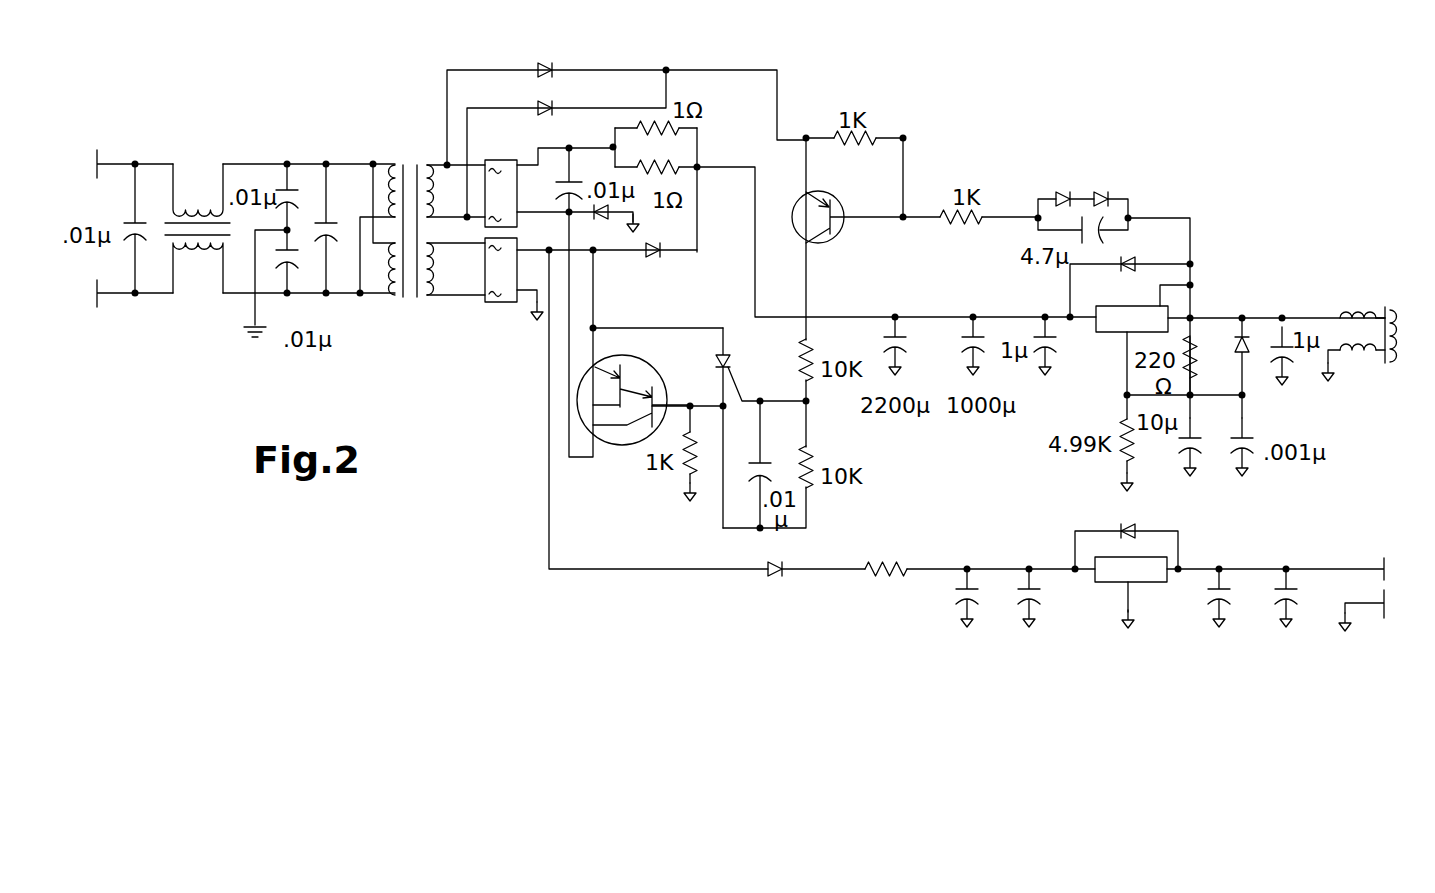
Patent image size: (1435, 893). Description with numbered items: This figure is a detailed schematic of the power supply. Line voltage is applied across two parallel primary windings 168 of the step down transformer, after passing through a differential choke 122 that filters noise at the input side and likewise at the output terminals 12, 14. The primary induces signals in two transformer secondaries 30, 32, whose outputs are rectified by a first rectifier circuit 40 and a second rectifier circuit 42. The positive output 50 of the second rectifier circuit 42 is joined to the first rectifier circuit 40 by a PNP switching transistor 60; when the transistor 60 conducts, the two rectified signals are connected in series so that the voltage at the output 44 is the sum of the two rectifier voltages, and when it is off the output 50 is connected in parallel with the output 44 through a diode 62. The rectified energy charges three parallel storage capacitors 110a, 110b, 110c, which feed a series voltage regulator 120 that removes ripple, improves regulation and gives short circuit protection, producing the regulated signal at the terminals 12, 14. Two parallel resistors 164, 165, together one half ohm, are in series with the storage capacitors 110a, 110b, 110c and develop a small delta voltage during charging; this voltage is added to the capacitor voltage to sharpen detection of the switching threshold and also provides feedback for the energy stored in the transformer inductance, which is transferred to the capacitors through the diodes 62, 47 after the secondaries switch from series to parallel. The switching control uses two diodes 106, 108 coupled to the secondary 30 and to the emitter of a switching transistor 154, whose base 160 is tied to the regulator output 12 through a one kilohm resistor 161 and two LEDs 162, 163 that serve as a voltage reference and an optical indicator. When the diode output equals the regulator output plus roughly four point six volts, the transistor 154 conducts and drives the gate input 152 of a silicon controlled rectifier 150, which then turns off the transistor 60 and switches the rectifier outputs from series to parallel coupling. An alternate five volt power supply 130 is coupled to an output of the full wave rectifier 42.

The output terminal 12 is at (1385, 305).
The output terminal 14 is at (1385, 366).
The transformer secondary 30 is at (437, 166).
The transformer secondary 32 is at (423, 267).
The first rectifier circuit 40 is at (500, 165).
The second rectifier circuit 42 is at (497, 302).
The output 44 is at (560, 148).
The diode 47 is at (600, 218).
The positive output 50 is at (580, 254).
The switching transistor 60 is at (625, 356).
The diode 62 is at (660, 246).
The diode 106 is at (545, 58).
The diode 108 is at (550, 104).
The storage capacitor 110a is at (880, 343).
The storage capacitor 110b is at (960, 343).
The storage capacitor 110c is at (1042, 343).
The voltage regulator 120 is at (1162, 318).
The differential choke 122 is at (195, 207).
The alternate 5 volt power supply 130 is at (940, 642).
The silicon controlled rectifier 150 is at (718, 362).
The gate input 152 is at (735, 386).
The switching transistor 154 is at (823, 191).
The base 160 is at (858, 223).
The resistor 161 is at (870, 140).
The led 162 is at (1062, 195).
The led 163 is at (1098, 195).
The resistor 164 is at (645, 127).
The resistor 165 is at (672, 163).
The parallel primary windings 168 is at (380, 190).